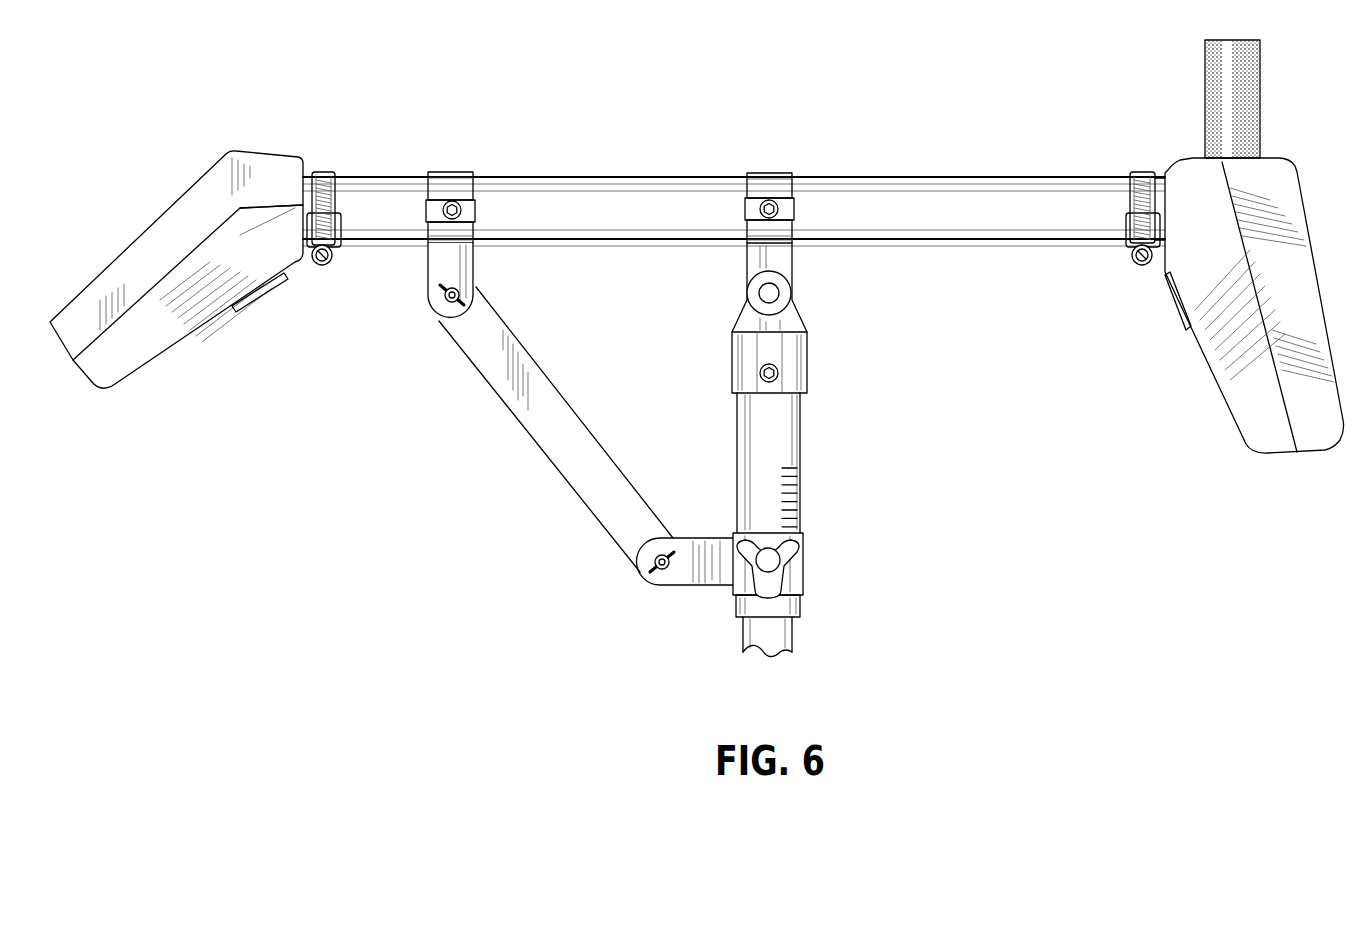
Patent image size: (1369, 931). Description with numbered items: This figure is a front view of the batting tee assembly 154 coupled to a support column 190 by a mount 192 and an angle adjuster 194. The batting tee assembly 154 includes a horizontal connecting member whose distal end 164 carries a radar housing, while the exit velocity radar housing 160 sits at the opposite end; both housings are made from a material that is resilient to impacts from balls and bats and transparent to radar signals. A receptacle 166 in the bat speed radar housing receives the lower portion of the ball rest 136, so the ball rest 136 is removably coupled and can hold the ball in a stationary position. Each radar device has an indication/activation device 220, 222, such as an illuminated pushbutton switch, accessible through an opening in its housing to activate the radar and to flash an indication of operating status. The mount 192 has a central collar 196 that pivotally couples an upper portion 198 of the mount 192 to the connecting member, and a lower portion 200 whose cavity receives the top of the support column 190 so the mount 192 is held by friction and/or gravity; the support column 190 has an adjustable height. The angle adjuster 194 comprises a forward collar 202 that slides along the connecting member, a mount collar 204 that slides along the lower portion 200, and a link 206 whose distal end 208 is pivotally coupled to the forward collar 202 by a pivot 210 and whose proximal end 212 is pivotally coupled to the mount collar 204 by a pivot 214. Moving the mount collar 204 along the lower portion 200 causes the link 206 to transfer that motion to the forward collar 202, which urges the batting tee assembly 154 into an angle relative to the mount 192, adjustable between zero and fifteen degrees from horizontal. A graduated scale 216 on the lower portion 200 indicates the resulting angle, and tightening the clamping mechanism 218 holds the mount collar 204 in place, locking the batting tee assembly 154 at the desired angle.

The batting tee assembly 154 is at (383, 133).
The ball rest 136 is at (1205, 87).
The receptacle 166 is at (957, 185).
The distal end 164 is at (97, 378).
The indication/activation device 222 is at (262, 300).
The exit velocity radar housing 160 is at (1268, 447).
The indication/activation device 220 is at (1172, 308).
The forward collar 202 is at (430, 268).
The distal end 208 is at (443, 327).
The pivot 210 is at (440, 295).
The angle adjuster 194 is at (486, 399).
The link 206 is at (570, 412).
The proximal end 212 is at (622, 558).
The pivot 214 is at (662, 573).
The mount 192 is at (820, 388).
The central collar 196 is at (772, 173).
The upper portion 198 is at (738, 357).
The lower portion 200 is at (738, 458).
The graduated scale 216 is at (802, 495).
The clamping mechanism 218 is at (752, 546).
The mount collar 204 is at (805, 581).
The support column 190 is at (792, 640).